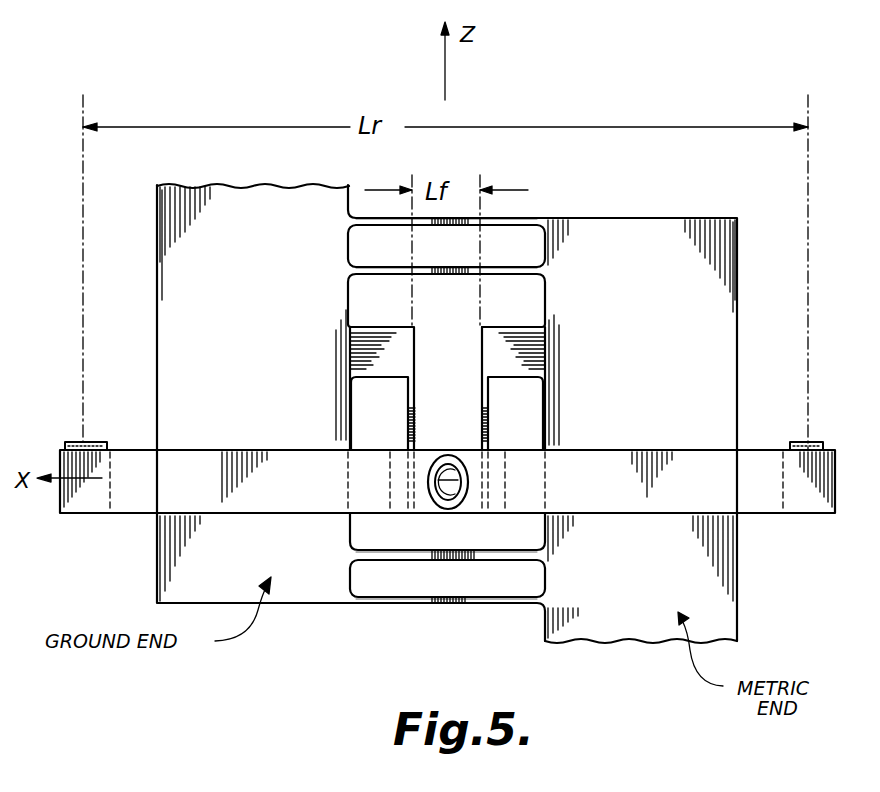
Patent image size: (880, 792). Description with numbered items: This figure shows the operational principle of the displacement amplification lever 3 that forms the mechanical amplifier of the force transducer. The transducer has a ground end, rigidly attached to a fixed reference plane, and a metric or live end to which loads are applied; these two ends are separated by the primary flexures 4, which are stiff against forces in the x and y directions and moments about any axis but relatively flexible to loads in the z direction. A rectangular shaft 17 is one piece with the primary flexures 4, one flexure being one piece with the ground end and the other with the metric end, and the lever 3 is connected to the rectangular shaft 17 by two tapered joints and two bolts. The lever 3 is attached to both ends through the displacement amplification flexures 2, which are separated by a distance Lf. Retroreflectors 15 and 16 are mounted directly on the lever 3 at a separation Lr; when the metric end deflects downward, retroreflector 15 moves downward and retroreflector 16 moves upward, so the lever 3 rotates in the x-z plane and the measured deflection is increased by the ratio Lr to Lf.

The displacement amplification flexures 2 is at (415, 413).
The displacement amplification lever 3 is at (205, 493).
The primary flexures 4 is at (512, 268).
The retroreflector 15 is at (80, 440).
The retroreflector 16 is at (818, 440).
The rectangular shaft 17 is at (467, 463).